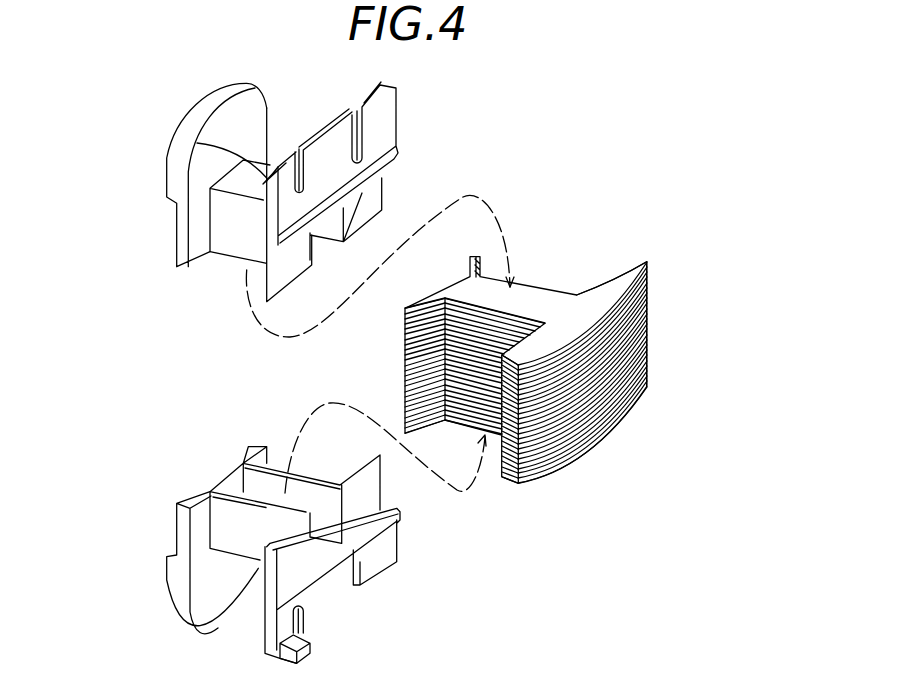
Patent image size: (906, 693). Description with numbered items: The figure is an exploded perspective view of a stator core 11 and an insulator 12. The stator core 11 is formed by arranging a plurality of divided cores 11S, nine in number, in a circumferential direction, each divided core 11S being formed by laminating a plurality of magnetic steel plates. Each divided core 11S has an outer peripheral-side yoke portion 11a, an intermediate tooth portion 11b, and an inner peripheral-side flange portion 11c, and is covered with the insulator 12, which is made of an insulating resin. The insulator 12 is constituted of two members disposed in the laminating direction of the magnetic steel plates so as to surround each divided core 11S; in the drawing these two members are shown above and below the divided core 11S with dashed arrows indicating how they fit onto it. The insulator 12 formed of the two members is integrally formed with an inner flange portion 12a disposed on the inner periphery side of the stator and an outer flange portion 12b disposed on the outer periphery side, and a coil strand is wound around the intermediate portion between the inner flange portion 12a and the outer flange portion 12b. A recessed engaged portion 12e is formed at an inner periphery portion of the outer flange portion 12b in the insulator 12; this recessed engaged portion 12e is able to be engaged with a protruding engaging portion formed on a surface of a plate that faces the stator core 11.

The stator core 11 is at (673, 314).
The outer peripheral-side yoke portion 11a is at (632, 397).
The intermediate tooth portion 11b is at (530, 292).
The inner peripheral-side flange portion 11c is at (404, 362).
The divided core 11S is at (634, 251).
The insulator 12 is at (166, 220).
The inner flange portion 12a is at (200, 120).
The outer flange portion 12b is at (384, 124).
The recessed engaged portion 12e is at (197, 143).